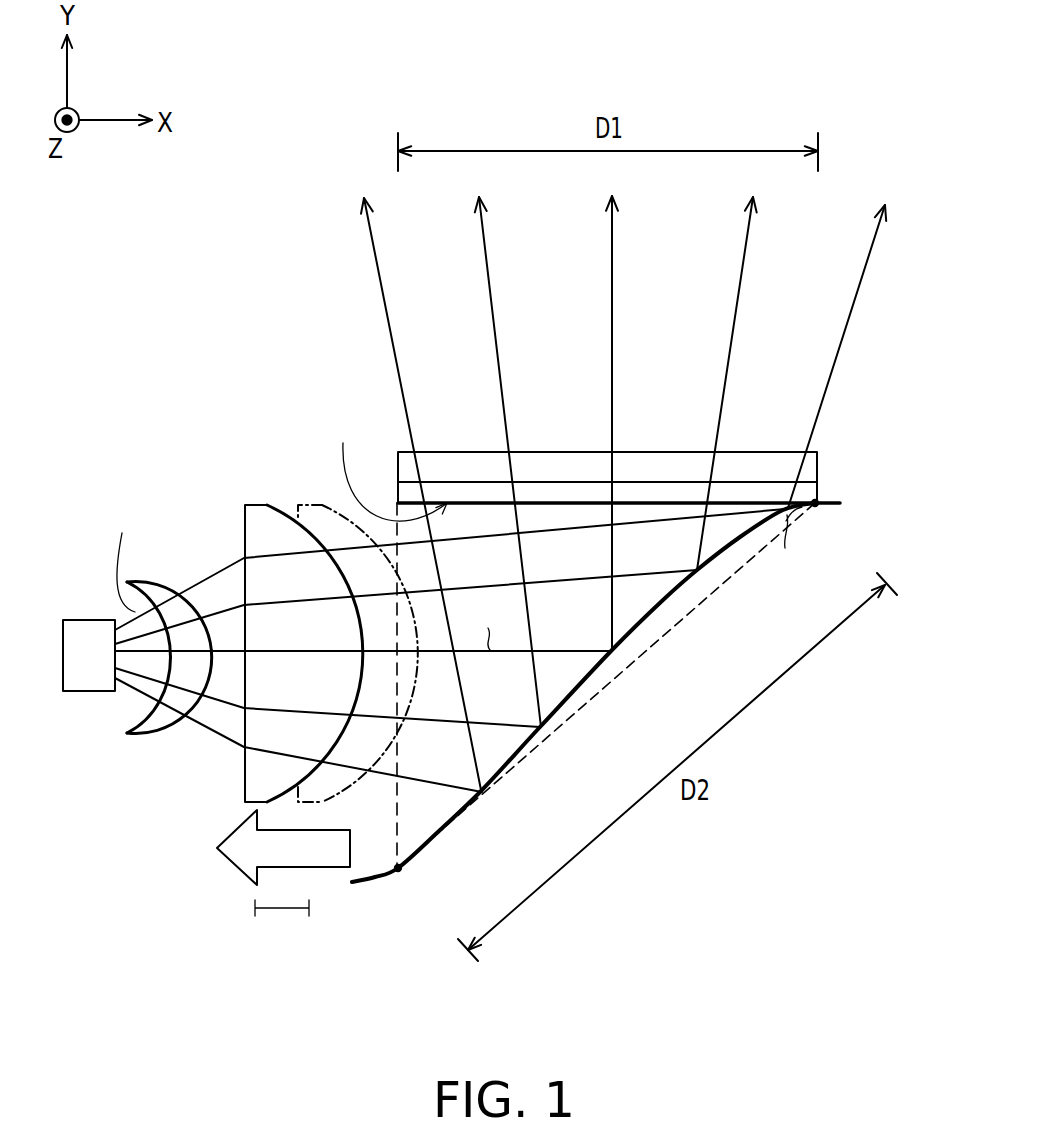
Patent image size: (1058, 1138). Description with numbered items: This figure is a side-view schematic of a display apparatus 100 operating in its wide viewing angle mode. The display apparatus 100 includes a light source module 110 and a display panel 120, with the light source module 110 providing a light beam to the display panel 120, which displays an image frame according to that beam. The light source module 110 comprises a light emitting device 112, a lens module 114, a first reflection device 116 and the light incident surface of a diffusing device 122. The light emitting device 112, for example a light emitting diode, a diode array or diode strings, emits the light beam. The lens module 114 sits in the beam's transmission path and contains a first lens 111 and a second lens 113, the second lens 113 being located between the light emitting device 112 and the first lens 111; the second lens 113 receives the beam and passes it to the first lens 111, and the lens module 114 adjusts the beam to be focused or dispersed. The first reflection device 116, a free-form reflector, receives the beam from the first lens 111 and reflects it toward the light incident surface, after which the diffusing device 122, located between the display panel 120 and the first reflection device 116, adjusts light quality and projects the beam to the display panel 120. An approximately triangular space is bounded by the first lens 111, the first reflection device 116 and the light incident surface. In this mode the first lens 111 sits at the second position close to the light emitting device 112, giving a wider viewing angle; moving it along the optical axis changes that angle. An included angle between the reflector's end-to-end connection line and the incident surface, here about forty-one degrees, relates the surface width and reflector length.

The display apparatus 100 is at (887, 958).
The light source module 110 is at (158, 218).
The first lens 111 is at (253, 777).
The light emitting device 112 is at (90, 620).
The second lens 113 is at (150, 728).
The lens module 114 is at (252, 698).
The first reflection device 116 is at (635, 632).
The display panel 120 is at (812, 467).
The diffusing device 122 is at (808, 493).